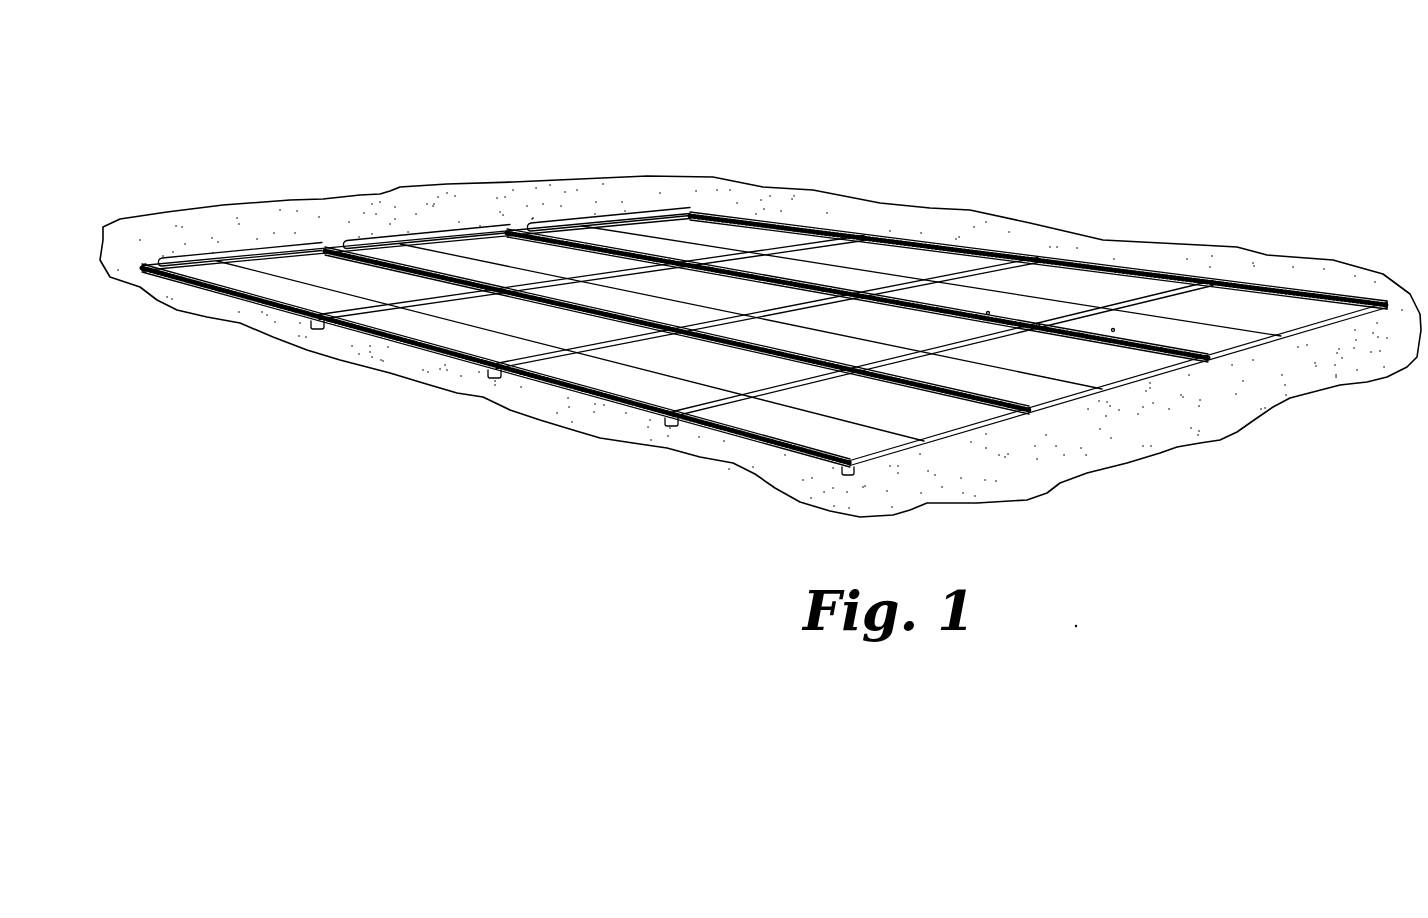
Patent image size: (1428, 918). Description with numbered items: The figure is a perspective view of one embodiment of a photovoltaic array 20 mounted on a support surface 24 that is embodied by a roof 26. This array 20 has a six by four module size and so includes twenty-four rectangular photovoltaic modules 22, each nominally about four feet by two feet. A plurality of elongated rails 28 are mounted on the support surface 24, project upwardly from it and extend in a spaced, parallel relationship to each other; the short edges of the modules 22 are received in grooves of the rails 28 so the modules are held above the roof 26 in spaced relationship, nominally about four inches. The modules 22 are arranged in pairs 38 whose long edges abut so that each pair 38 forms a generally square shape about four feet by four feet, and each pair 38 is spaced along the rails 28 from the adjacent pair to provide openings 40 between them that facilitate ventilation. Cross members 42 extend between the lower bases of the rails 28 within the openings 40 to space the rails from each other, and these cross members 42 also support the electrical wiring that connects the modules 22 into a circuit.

The photovoltaic array 20 is at (773, 116).
The photovoltaic modules 22 is at (877, 437).
The support surface 24 is at (1196, 212).
The roof 26 is at (1307, 273).
The elongated rails 28 is at (207, 266).
The pairs of photovoltaic modules 38 is at (245, 253).
The openings 40 is at (1038, 325).
The cross members 42 is at (800, 278).